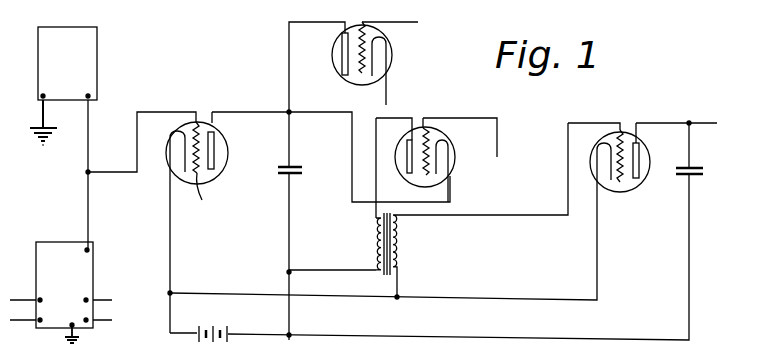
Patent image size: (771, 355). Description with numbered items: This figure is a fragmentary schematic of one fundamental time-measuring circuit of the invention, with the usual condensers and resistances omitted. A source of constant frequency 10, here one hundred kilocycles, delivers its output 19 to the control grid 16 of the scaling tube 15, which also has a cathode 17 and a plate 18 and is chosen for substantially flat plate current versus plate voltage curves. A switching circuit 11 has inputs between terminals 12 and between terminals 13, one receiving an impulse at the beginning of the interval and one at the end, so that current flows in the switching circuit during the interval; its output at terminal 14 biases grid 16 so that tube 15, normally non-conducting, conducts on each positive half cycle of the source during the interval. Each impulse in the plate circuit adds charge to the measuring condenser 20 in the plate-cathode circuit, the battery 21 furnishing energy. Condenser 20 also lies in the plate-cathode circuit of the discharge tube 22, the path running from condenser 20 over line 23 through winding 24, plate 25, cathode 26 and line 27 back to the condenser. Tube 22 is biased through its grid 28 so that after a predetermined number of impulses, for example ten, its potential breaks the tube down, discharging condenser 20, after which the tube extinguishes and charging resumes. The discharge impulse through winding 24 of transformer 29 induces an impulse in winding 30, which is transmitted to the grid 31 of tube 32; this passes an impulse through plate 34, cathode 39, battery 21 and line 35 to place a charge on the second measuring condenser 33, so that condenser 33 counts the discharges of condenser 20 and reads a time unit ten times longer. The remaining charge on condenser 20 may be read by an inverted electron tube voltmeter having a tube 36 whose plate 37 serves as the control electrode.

The source of constant frequency 10 is at (91, 33).
The switching circuit 11 is at (53, 332).
The terminals 12 is at (38, 317).
The terminals 13 is at (88, 318).
The terminal 14 is at (90, 249).
The tube 15 is at (170, 156).
The control grid 16 is at (205, 195).
The cathode 17 is at (183, 134).
The plate 18 is at (215, 149).
The output 19 is at (90, 136).
The measuring condenser 20 is at (285, 175).
The battery 21 is at (231, 333).
The electronic tube 22 is at (408, 141).
The line 23 is at (330, 270).
The winding 24 is at (373, 234).
The plate 25 is at (407, 168).
The cathode 26 is at (450, 157).
The line 27 is at (322, 112).
The grid 28 is at (424, 143).
The transformer 29 is at (383, 277).
The winding 30 is at (402, 240).
The grid 31 is at (627, 183).
The tube 32 is at (643, 186).
The second measuring condenser 33 is at (693, 178).
The plate 34 is at (639, 157).
The line 35 is at (558, 339).
The tube 36 is at (392, 51).
The plate 37 is at (341, 55).
The cathode 39 is at (605, 142).